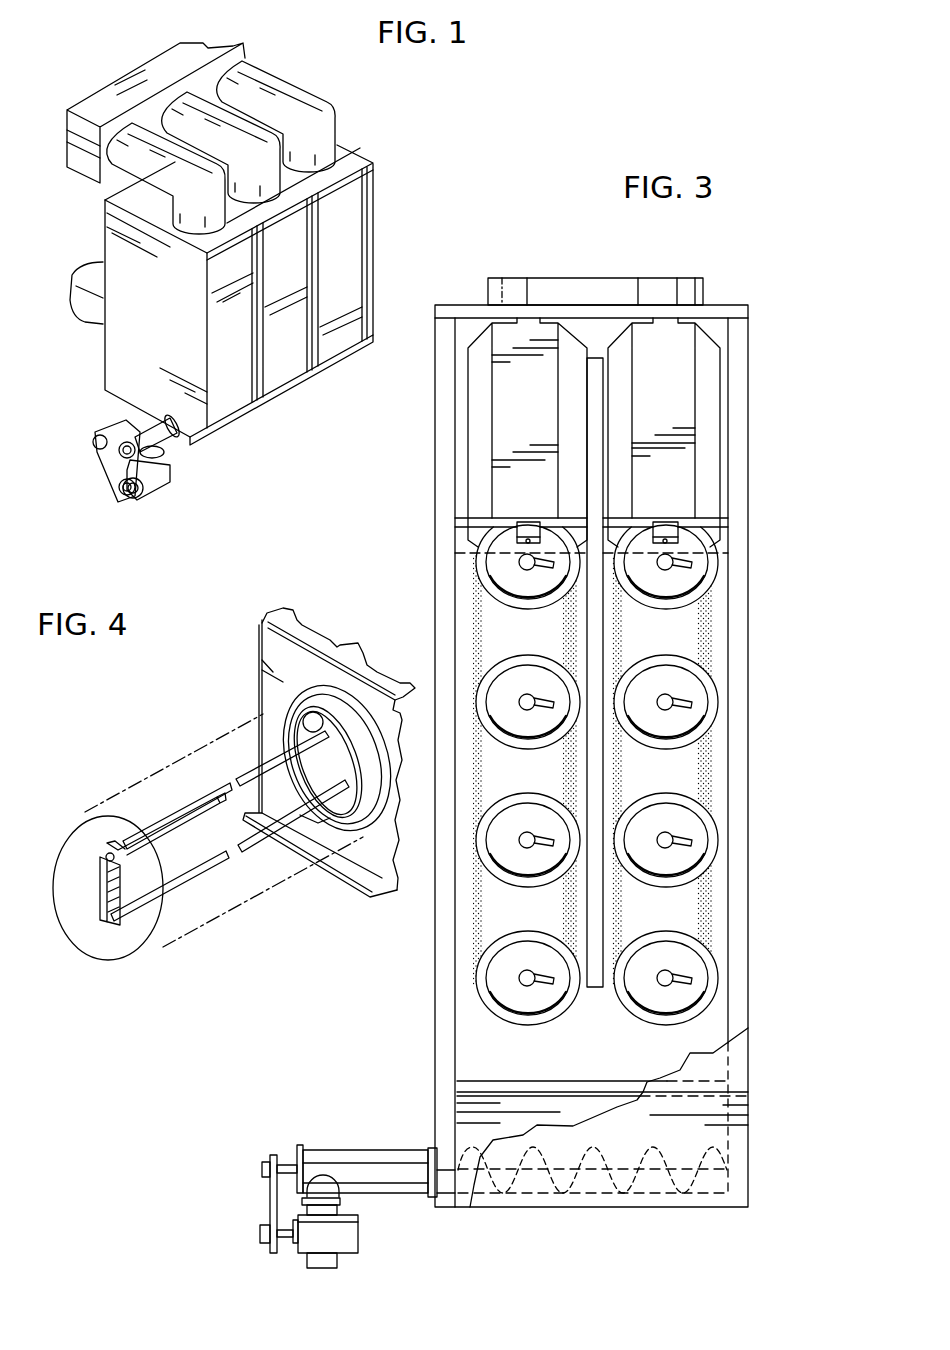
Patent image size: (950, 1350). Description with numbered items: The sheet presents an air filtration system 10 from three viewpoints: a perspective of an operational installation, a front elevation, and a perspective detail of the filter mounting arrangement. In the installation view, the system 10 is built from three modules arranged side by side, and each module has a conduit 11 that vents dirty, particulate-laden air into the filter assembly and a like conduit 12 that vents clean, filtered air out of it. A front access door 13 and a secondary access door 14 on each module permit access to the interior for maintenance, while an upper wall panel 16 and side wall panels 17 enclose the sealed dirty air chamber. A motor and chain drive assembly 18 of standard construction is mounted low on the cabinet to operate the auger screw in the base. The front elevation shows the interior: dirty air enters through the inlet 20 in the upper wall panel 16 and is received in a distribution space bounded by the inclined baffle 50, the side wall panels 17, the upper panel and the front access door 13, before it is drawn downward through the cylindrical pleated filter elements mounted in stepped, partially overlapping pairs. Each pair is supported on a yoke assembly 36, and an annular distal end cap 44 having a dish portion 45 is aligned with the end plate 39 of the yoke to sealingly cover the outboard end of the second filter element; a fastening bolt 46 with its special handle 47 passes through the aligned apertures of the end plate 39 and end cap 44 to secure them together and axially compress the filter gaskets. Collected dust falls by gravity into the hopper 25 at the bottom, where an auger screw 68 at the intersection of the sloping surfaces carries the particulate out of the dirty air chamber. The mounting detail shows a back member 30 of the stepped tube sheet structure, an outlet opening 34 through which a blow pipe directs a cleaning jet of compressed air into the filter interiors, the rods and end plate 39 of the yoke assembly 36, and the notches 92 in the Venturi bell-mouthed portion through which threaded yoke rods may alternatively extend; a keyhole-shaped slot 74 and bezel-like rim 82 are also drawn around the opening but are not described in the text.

In FIG. 1, the air filtration system 10 is at (237, 296).
In FIG. 3, the air filtration system 10 is at (407, 1073).
In FIG. 1, the conduit 11 is at (273, 102).
In FIG. 1, the conduit 12 is at (92, 288).
In FIG. 1, the front access door 13 is at (233, 395).
In FIG. 1, the secondary access door 14 is at (368, 255).
In FIG. 1, the upper wall panel 16 is at (343, 162).
In FIG. 1, the side wall panel 17 is at (127, 345).
In FIG. 3, the side wall panel 17 is at (450, 575).
In FIG. 1, the motor and chain drive assembly 18 is at (160, 492).
In FIG. 3, the motor and chain drive assembly 18 is at (254, 1190).
In FIG. 3, the inlet 20 is at (628, 276).
In FIG. 3, the hopper 25 is at (475, 1038).
In FIG. 3, the inclined baffle 50 is at (697, 415).
In FIG. 3, the annular distal end cap 44 is at (646, 786).
In FIG. 3, the dish portion 45 is at (670, 720).
In FIG. 3, the fastening bolt 46 is at (672, 565).
In FIG. 3, the handle 47 is at (675, 840).
In FIG. 3, the auger screw 68 is at (588, 1162).
In FIG. 4, the back member 30 is at (275, 648).
In FIG. 4, the outlet opening 34 is at (328, 763).
In FIG. 4, the yoke assembly 36 is at (183, 765).
In FIG. 4, the end plate 39 is at (102, 908).
In FIG. 4, the keyhole slot 74 is at (313, 720).
In FIG. 4, the bezel 82 is at (383, 805).
In FIG. 4, the notches 92 is at (332, 817).